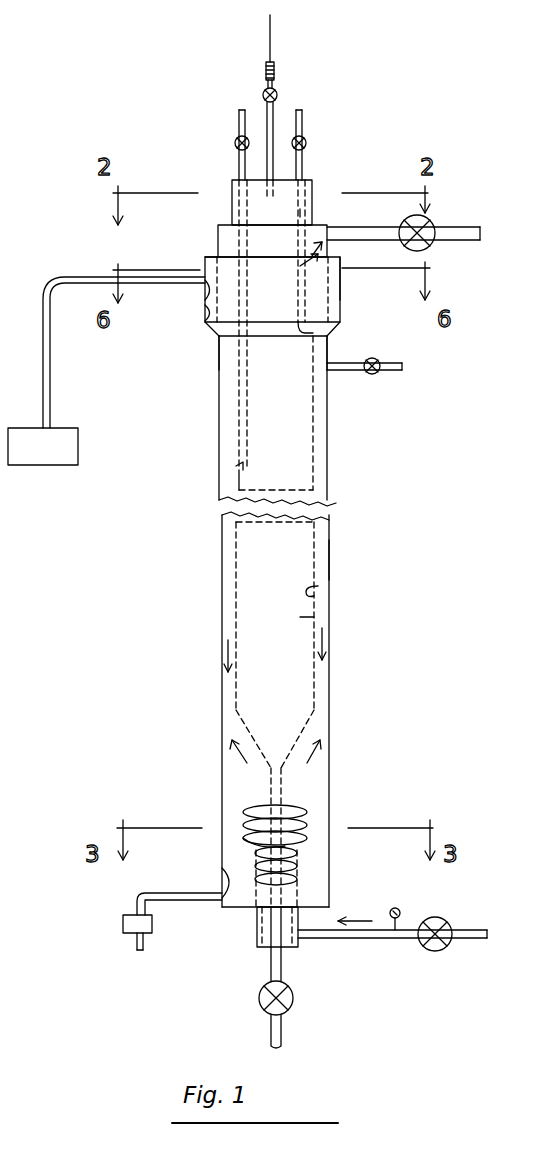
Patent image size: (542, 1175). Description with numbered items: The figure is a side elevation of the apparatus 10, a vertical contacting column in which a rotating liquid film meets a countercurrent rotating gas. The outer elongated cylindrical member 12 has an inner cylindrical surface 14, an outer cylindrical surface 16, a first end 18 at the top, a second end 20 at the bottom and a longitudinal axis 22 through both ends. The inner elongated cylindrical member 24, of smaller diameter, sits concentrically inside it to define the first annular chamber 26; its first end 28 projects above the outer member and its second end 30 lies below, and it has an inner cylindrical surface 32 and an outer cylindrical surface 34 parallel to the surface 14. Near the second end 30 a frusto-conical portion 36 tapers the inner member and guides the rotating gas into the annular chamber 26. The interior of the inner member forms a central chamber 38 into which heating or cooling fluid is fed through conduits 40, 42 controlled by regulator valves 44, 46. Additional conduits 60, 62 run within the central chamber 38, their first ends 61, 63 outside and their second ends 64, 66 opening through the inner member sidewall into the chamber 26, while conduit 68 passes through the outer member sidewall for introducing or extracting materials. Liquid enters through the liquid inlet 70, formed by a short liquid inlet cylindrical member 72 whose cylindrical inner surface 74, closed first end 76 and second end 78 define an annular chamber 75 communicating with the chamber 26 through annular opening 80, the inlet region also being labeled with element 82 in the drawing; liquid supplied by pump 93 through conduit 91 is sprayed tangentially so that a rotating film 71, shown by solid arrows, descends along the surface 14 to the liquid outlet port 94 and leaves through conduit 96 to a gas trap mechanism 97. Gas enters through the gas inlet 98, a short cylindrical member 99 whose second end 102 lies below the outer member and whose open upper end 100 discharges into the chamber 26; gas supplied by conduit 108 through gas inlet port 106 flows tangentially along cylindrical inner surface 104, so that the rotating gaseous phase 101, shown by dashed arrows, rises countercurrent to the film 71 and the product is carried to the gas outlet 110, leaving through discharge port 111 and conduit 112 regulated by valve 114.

The apparatus 10 is at (392, 493).
The outer elongated cylindrical member 12 is at (332, 683).
The inner cylindrical surface 14 is at (222, 602).
The outer cylindrical surface 16 is at (330, 555).
The first end 18 is at (230, 225).
The second end 20 is at (240, 910).
The longitudinal axis 22 is at (275, 30).
The inner elongated cylindrical member 24 is at (335, 458).
The first annular chamber 26 is at (330, 436).
The first end 28 is at (310, 178).
The second end 30 is at (285, 980).
The inner cylindrical surface 32 is at (318, 586).
The outer cylindrical surface 34 is at (219, 441).
The frusto-conical portion 36 is at (315, 724).
The central chamber 38 is at (316, 617).
The conduit 40 is at (273, 68).
The conduit 42 is at (285, 1035).
The regulator valve 44 is at (277, 92).
The regulator valve 46 is at (295, 1000).
The additional conduit 60 is at (238, 163).
The first end 61 is at (237, 142).
The additional conduit 62 is at (300, 213).
The first end 63 is at (305, 148).
The second end 64 is at (236, 486).
The second end 66 is at (309, 338).
The conduit 68 is at (395, 372).
The liquid inlet 70 is at (210, 330).
The rotating film 71 is at (312, 645).
The liquid inlet cylindrical member 72 is at (340, 303).
The cylindrical inner surface 74 is at (205, 322).
The annular chamber 75 is at (340, 280).
The closed first end 76 is at (213, 257).
The second end 78 is at (215, 338).
The annular opening 80 is at (330, 333).
The upper port 82 is at (203, 300).
The conduit 91 is at (50, 347).
The pump 93 is at (70, 428).
The liquid outlet port 94 is at (222, 872).
The conduit 96 is at (140, 896).
The gas trap mechanism 97 is at (123, 920).
The gas inlet 98 is at (305, 892).
The short cylindrical member 99 is at (300, 875).
The open upper end 100 is at (305, 845).
The rotating gaseous phase 101 is at (243, 762).
The second end 102 is at (262, 950).
The cylindrical inner surface 104 is at (255, 940).
The gas inlet port 106 is at (300, 948).
The conduit 108 is at (408, 928).
The gas outlet 110 is at (300, 268).
The discharge port 111 is at (300, 240).
The conduit 112 is at (385, 241).
The valve 114 is at (432, 222).